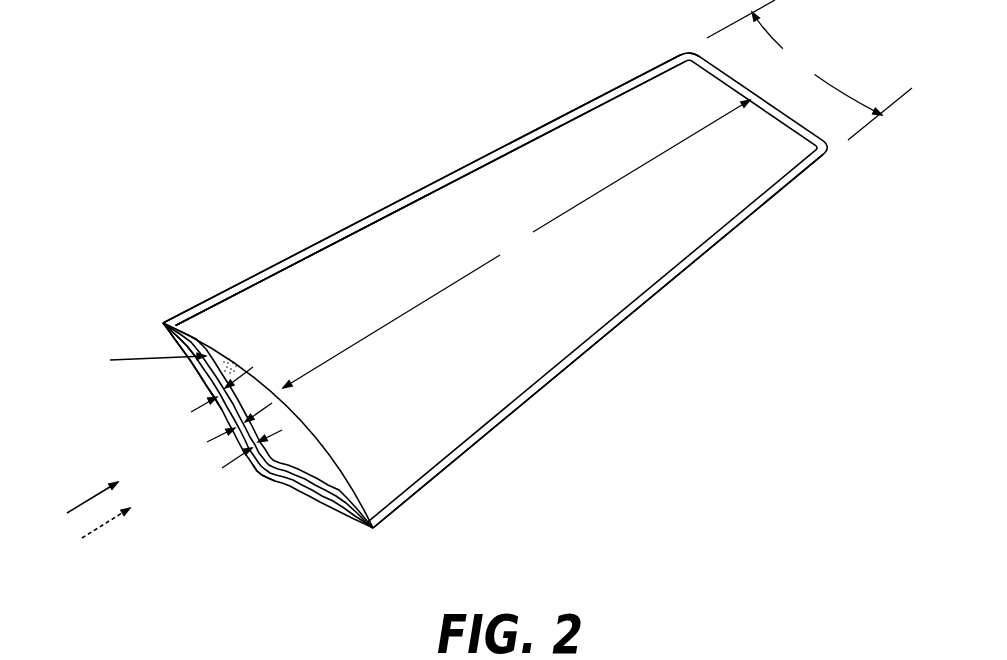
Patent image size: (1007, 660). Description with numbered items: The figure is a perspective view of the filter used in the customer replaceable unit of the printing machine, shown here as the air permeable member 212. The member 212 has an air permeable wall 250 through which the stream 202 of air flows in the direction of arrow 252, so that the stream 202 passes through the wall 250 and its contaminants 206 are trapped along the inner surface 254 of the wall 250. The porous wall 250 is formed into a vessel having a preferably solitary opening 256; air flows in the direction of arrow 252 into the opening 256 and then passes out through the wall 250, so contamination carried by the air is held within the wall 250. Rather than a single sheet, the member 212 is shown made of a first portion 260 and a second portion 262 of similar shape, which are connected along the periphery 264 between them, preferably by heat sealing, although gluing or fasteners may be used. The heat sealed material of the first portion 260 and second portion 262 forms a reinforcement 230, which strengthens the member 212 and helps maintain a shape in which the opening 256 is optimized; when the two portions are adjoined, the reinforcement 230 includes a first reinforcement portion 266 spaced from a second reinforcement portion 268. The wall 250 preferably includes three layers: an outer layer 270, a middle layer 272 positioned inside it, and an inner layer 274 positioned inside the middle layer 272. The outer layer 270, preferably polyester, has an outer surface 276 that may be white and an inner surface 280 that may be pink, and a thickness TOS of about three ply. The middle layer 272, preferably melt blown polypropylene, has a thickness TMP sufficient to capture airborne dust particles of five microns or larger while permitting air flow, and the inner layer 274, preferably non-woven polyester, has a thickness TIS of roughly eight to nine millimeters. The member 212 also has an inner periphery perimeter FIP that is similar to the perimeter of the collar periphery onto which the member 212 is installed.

The air permeable member 212 is at (355, 105).
The air permeable wall 250 is at (407, 427).
The first reinforcement portion 266 is at (462, 170).
The reinforcement 230 is at (555, 120).
The periphery 264 is at (634, 81).
The second reinforcement portion 268 is at (575, 357).
The first portion 260 is at (260, 302).
The inner surface 254 is at (305, 435).
The outer layer 270 is at (290, 482).
The middle layer 272 is at (312, 493).
The inner layer 274 is at (340, 507).
The inner surface 280 is at (203, 380).
The outer surface 276 is at (170, 347).
The second portion 262 is at (193, 342).
The opening 256 is at (265, 473).
The contaminants 206 is at (232, 373).
The flow length LF is at (516, 244).
The thickness of inner layer TIS is at (208, 397).
The thickness of middle layer TMP is at (221, 430).
The thickness of outer layer TOS is at (233, 457).
The inner periphery perimeter FIP is at (143, 360).
The arrow 252 is at (98, 494).
The stream of air 202 is at (92, 532).